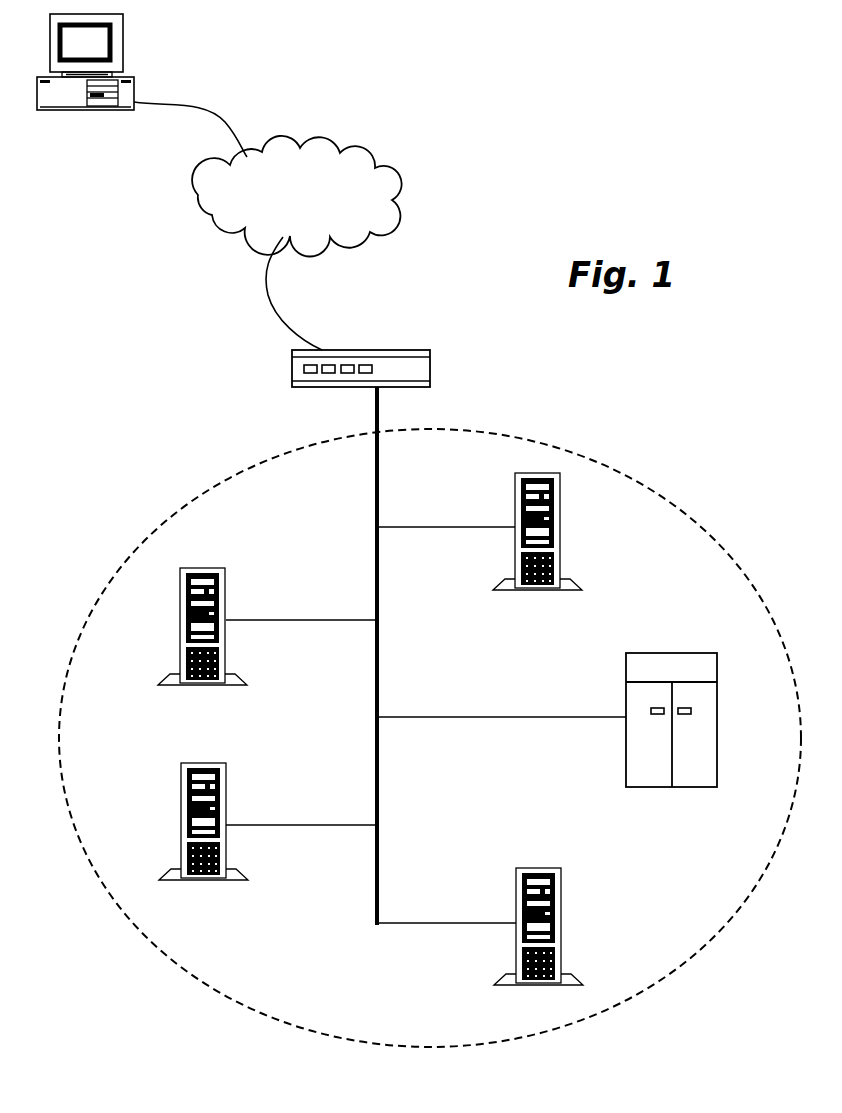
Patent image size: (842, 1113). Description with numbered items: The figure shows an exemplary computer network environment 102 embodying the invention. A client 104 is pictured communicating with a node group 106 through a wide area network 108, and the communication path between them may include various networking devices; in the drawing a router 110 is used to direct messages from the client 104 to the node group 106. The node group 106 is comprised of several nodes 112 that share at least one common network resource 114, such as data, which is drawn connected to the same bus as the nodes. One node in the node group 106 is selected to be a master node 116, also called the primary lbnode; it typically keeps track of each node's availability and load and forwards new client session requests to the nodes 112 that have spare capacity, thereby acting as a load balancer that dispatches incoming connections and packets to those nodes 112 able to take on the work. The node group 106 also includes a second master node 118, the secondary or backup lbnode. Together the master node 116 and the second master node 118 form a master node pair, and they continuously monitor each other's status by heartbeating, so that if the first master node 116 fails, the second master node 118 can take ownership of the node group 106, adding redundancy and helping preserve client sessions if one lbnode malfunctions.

The computer network environment 102 is at (406, 53).
The client 104 is at (123, 31).
The node group 106 is at (667, 500).
The wide area network (WAN) 108 is at (385, 170).
The router 110 is at (292, 372).
The node 112 is at (538, 473).
The common network resource 114 is at (626, 682).
The master node 116 is at (226, 592).
The second master node 118 is at (562, 886).